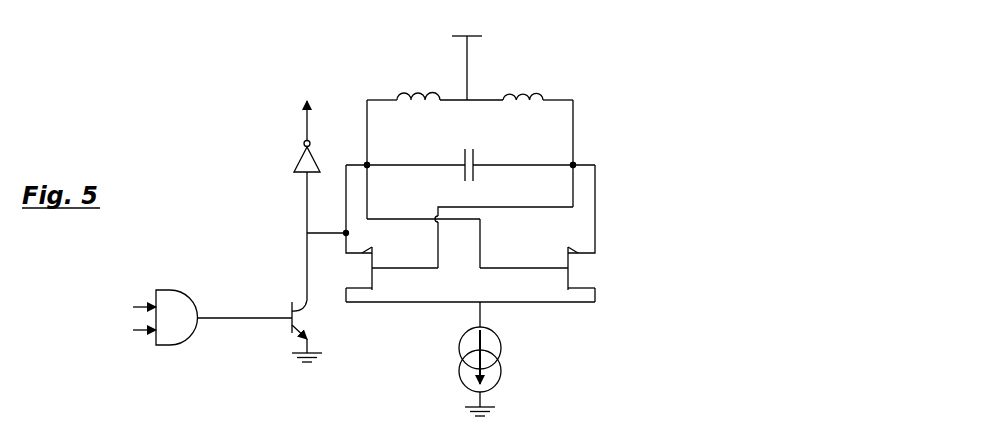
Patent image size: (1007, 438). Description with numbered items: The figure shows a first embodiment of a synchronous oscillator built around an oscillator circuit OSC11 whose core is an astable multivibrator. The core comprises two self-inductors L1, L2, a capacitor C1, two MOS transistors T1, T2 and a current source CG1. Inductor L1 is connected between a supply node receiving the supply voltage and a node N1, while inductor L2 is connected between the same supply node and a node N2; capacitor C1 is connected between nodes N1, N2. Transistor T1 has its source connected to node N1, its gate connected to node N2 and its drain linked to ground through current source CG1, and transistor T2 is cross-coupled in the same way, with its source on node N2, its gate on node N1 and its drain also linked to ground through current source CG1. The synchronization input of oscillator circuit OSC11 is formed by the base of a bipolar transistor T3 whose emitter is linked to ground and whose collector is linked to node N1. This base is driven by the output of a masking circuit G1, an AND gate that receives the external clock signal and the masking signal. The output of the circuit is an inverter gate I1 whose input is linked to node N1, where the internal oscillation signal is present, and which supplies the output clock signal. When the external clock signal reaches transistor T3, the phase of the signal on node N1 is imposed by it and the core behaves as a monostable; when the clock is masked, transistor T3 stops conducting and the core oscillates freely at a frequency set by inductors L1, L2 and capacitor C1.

The oscillator circuit OSC11 is at (212, 110).
The self-inductor L1 is at (417, 90).
The self-inductor L2 is at (520, 90).
The capacitor C1 is at (476, 161).
The node N1 is at (370, 164).
The node N2 is at (575, 164).
The transistor T1 is at (376, 257).
The transistor T2 is at (562, 257).
The bipolar transistor T3 is at (304, 318).
The current source CG1 is at (502, 361).
The inverter gate I1 is at (297, 164).
The masking circuit G1 is at (193, 317).